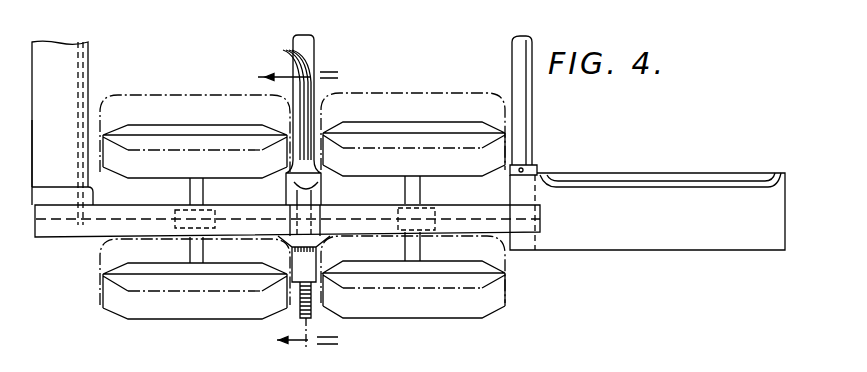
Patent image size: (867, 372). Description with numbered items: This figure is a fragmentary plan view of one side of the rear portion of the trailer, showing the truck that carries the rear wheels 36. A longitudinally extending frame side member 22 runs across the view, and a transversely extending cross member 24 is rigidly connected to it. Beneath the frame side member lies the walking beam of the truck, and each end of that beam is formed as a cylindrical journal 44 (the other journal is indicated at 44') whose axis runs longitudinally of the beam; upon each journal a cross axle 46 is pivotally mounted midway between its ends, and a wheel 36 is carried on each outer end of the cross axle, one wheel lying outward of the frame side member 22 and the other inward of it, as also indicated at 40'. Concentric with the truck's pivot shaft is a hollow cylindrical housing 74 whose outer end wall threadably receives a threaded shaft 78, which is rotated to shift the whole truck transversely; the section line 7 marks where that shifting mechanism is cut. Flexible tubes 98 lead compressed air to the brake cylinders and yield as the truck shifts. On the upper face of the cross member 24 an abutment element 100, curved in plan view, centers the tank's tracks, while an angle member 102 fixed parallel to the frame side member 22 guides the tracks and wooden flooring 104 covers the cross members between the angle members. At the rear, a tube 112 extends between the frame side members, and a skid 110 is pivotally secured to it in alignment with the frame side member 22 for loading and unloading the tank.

The section line 7- 7 is at (287, 211).
The frame side member 22 is at (50, 238).
The cross member 24 is at (307, 47).
The rear wheel 36 is at (170, 125).
The axle 40' is at (363, 251).
The cylindrical journal 44 is at (432, 218).
The wheel bracket 44' is at (168, 220).
The cross axle 46 is at (193, 252).
The hollow cylindrical housing 74 is at (300, 256).
The threaded shaft 78 is at (302, 312).
The flexible tube 98 is at (292, 88).
The abutment element 100 is at (318, 183).
The angle member 102 is at (48, 184).
The wooden flooring element 104 is at (67, 58).
The skid 110 is at (710, 226).
The tube 112 is at (525, 110).